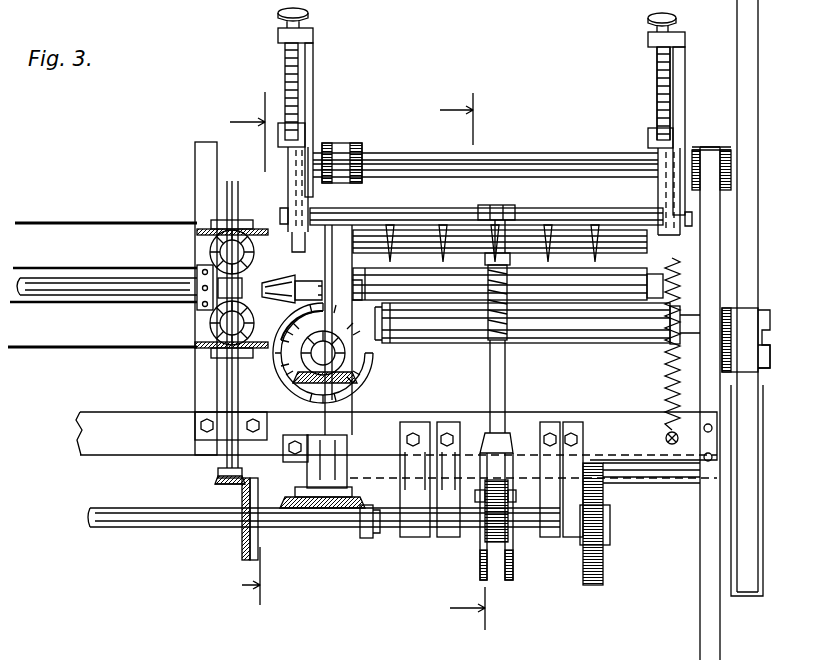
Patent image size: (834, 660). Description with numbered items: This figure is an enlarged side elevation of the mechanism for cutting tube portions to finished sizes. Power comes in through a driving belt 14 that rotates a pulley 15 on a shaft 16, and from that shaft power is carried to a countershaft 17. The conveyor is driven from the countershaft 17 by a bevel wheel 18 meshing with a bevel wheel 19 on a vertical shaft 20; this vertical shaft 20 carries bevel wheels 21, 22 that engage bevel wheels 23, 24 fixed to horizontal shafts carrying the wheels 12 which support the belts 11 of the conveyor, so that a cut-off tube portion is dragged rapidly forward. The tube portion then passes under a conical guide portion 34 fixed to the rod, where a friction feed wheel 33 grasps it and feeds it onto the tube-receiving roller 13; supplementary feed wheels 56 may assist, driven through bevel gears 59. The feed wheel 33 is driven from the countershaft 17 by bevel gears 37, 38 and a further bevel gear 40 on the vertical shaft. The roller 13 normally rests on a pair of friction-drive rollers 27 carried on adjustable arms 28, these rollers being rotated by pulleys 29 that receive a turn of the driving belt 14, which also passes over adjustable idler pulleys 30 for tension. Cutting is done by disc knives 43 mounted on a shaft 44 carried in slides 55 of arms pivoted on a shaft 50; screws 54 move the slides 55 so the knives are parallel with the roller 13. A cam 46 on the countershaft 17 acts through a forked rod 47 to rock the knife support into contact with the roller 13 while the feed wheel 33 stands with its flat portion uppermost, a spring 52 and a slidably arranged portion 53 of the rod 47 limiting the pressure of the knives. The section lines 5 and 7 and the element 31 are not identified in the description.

The section line 5- 5 is at (249, 355).
The section line 7- 7 is at (466, 363).
The belts 11 is at (128, 221).
The wheels 12 is at (255, 254).
The roller 13 is at (565, 290).
The belt 14 is at (757, 112).
The pulley 15 is at (758, 534).
The shaft 16 is at (668, 486).
The countershaft 17 is at (333, 530).
The bevel wheel 18 is at (245, 541).
The bevel wheel 19 is at (215, 481).
The vertical shaft 20 is at (225, 388).
The bevel wheel 21 is at (200, 352).
The bevel wheel 22 is at (255, 222).
The bevel wheel 23 is at (213, 325).
The bevel wheel 24 is at (212, 247).
The friction-drive rollers 27 is at (617, 345).
The adjustable arms 28 is at (358, 406).
The pulleys 29 is at (762, 318).
The adjustable idler pulleys 30 is at (766, 368).
The spring 31 is at (720, 352).
The friction feed wheel 33 is at (378, 360).
The conical guide portion 34 is at (305, 300).
The bevel gear 37 is at (370, 540).
The bevel gear 38 is at (305, 500).
The bevel gear 40 is at (290, 388).
The disc knives 43 is at (437, 258).
The shaft 44 is at (500, 252).
The cam 46 is at (490, 531).
The forked rod 47 is at (505, 442).
The shaft 50 is at (585, 163).
The spring 52 is at (490, 332).
The slidably arranged portion 53 is at (537, 222).
The screws 54 is at (655, 69).
The slides 55 is at (300, 136).
The supplementary feed wheels 56 is at (305, 280).
The bevel gears 59 is at (283, 352).